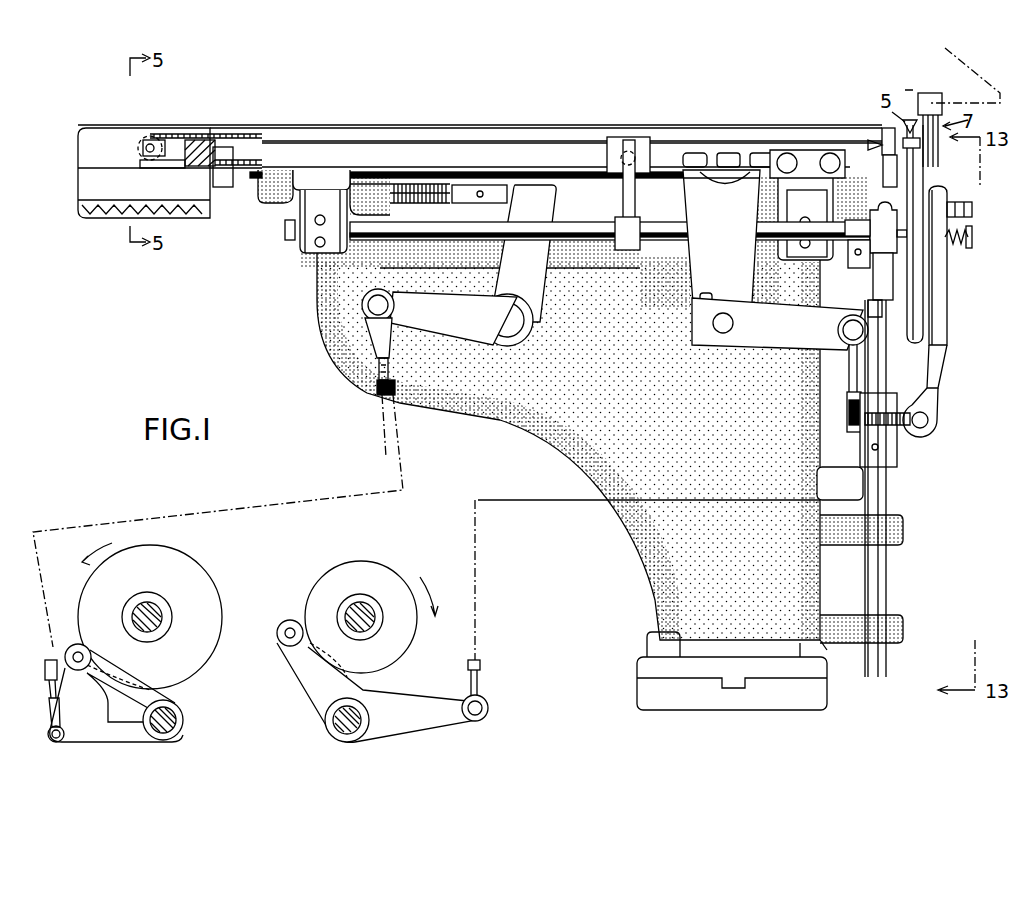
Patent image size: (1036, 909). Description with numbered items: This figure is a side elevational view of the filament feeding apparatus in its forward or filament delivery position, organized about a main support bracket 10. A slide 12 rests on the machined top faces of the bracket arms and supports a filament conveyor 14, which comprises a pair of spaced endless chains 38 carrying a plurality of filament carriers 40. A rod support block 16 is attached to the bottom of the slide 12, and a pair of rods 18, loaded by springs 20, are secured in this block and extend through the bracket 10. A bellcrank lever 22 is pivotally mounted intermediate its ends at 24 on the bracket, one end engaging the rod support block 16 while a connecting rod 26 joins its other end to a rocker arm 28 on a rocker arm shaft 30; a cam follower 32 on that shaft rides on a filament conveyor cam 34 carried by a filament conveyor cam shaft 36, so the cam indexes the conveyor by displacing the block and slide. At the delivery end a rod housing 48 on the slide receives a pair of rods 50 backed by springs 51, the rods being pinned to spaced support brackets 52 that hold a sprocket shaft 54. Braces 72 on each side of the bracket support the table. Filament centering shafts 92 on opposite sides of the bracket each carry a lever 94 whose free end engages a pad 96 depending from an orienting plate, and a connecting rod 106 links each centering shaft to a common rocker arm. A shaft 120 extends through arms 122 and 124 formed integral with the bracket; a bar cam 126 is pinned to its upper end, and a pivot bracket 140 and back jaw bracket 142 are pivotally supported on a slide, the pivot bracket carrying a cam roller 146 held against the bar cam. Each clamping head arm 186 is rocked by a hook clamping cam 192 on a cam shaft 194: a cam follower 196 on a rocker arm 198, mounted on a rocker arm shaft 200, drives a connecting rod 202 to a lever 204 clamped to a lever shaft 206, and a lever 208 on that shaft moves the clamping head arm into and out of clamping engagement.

The main support bracket 10 is at (551, 451).
The slide 12 is at (563, 176).
The filament conveyor 14 is at (205, 130).
The rod support block 16 is at (468, 188).
The rods 18 is at (432, 186).
The springs 20 is at (400, 178).
The bellcrank lever 22 is at (536, 290).
The pivot 24 is at (523, 330).
The connecting rod 26 is at (392, 380).
The rocker arm 28 is at (145, 745).
The rocker arm shaft 30 is at (178, 716).
The cam follower 32 is at (80, 648).
The filament conveyor cam 34 is at (200, 575).
The filament conveyor cam shaft 36 is at (160, 620).
The endless chains 38 is at (223, 133).
The filament carriers 40 is at (250, 132).
The rod housing 48 is at (223, 188).
The rods 50 is at (200, 136).
The springs 51 is at (196, 168).
The support brackets 52 is at (162, 130).
The sprocket shaft 54 is at (145, 140).
The braces 72 is at (300, 250).
The filament centering shafts 92 is at (594, 238).
The lever 94 is at (637, 196).
The pad 96 is at (643, 145).
The connecting rod 106 is at (848, 278).
The shaft 120 is at (892, 582).
The arm 122 is at (903, 635).
The arm 124 is at (903, 530).
The bar cam 126 is at (897, 458).
The pivot bracket 140 is at (933, 366).
The back jaw bracket 142 is at (925, 312).
The cam roller 146 is at (940, 423).
The clamping head arm 186 is at (808, 150).
The hook clamping cam 192 is at (378, 565).
The cam shaft 194 is at (368, 604).
The cam follower 196 is at (296, 622).
The rocker arm 198 is at (420, 700).
The rocker arm shaft 200 is at (352, 730).
The connecting rod 202 is at (846, 414).
The lever 204 is at (777, 338).
The lever shaft 206 is at (723, 334).
The lever 208 is at (740, 252).